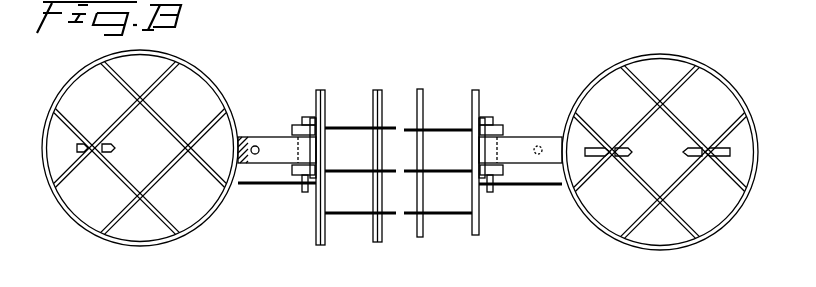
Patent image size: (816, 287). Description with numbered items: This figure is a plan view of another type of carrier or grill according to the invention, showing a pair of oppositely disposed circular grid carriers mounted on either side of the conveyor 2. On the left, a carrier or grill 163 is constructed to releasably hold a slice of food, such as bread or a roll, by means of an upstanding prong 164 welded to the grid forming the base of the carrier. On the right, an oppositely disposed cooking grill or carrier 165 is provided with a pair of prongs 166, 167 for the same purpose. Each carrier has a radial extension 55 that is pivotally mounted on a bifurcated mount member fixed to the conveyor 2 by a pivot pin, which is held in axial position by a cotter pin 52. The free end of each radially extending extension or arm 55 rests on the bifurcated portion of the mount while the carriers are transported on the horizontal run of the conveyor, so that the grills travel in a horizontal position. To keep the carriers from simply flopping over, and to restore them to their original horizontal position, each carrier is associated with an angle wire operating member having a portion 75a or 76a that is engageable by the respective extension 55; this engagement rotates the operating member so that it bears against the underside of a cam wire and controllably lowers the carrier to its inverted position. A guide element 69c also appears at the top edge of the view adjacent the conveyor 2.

The conveyor 2 is at (368, 218).
The cotter pin 52 is at (283, 188).
The radial extension 55 is at (275, 145).
The guide member 69c is at (351, 0).
The portion of angle wire operating member 75a is at (312, 128).
The portion of angle wire operating member 76a is at (485, 150).
The carrier or grill 163 is at (72, 78).
The upstanding prong 164 is at (115, 149).
The cooking grill or carrier 165 is at (687, 60).
The prong 166 is at (628, 153).
The prong 167 is at (688, 152).